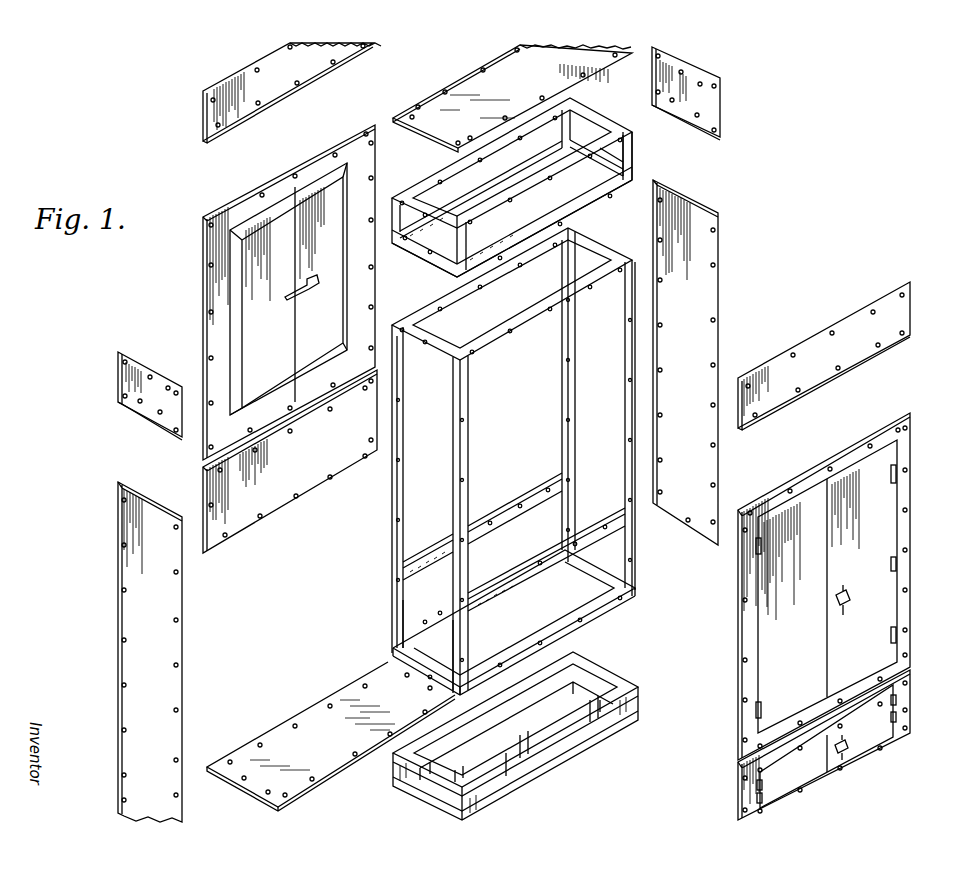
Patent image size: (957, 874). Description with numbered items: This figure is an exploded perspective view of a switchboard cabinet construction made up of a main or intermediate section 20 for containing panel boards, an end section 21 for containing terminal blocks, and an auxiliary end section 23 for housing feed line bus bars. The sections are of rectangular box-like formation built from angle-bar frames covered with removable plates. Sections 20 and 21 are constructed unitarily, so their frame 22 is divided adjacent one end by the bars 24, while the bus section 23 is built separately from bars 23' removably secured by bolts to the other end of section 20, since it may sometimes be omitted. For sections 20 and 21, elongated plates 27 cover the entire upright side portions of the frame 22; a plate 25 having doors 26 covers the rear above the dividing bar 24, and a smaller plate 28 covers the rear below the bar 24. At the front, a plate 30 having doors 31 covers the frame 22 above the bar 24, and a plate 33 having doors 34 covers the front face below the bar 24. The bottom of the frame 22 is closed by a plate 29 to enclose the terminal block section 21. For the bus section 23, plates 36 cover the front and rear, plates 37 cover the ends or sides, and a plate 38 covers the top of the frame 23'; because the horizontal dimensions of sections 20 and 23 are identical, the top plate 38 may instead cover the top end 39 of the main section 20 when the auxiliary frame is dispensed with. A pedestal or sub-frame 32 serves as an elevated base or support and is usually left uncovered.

The main or intermediate section 20 is at (418, 517).
The end section 21 is at (429, 595).
The frame 22 is at (626, 388).
The auxiliary end section 23 is at (512, 187).
The bars 23' is at (635, 156).
The bars 24 is at (438, 543).
The plate 25 is at (205, 281).
The doors 26 is at (313, 207).
The elongated plates 27 is at (714, 240).
The smaller plate 28 is at (340, 467).
The plate 29 is at (341, 694).
The plate 30 is at (908, 539).
The doors 31 is at (842, 483).
The pedestal or sub-frame 32 is at (634, 708).
The plate 33 is at (910, 704).
The doors 34 is at (853, 748).
The plates 36 is at (304, 80).
The plates 37 is at (721, 101).
The plate 38 is at (484, 67).
The top end 39 is at (540, 278).